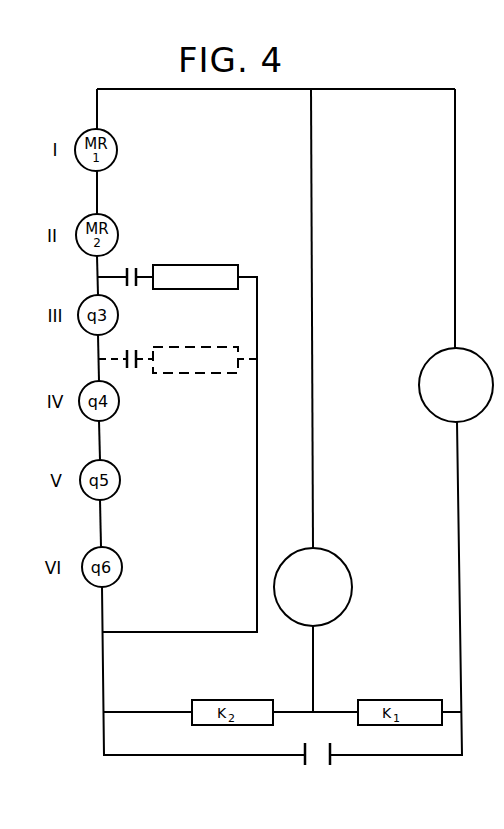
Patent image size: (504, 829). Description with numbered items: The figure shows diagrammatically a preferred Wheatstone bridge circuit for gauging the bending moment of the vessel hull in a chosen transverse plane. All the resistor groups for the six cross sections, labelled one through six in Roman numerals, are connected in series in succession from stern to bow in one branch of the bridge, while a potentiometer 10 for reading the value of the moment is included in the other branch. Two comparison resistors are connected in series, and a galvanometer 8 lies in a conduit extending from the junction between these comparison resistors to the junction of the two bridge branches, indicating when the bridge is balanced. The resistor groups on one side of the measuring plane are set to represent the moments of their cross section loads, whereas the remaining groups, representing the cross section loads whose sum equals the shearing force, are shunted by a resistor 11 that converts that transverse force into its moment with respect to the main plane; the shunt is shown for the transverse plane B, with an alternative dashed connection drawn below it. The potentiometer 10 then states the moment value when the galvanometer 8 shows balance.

The shunt resistor 11 is at (204, 273).
The transverse plane B is at (195, 262).
The galvanometer 8 is at (337, 593).
The potentiometer 10 is at (440, 378).